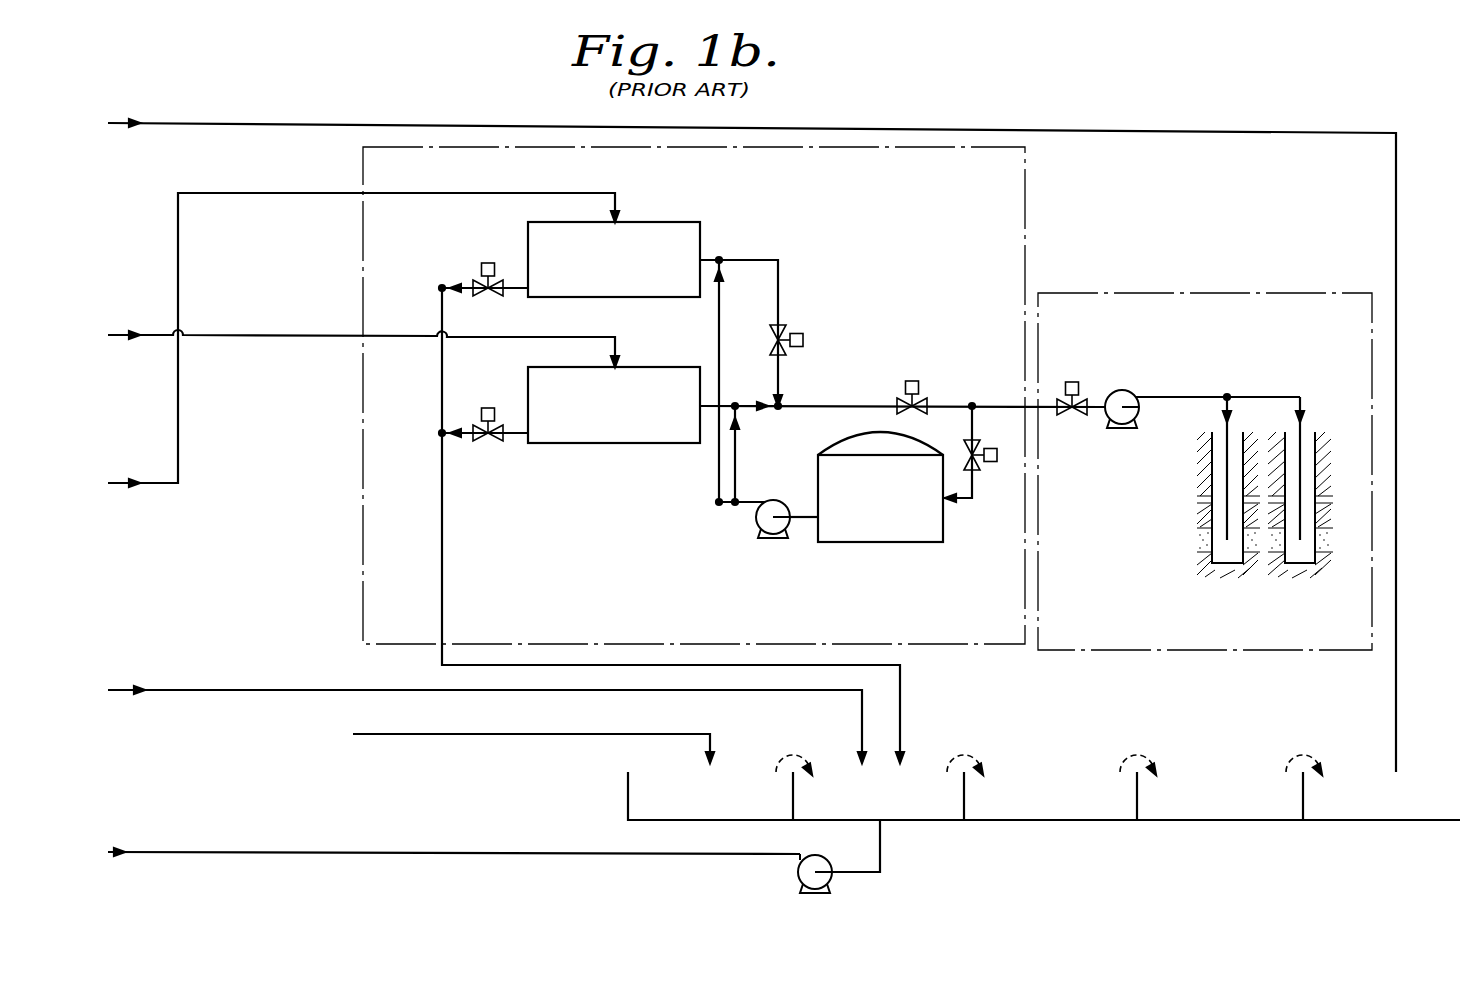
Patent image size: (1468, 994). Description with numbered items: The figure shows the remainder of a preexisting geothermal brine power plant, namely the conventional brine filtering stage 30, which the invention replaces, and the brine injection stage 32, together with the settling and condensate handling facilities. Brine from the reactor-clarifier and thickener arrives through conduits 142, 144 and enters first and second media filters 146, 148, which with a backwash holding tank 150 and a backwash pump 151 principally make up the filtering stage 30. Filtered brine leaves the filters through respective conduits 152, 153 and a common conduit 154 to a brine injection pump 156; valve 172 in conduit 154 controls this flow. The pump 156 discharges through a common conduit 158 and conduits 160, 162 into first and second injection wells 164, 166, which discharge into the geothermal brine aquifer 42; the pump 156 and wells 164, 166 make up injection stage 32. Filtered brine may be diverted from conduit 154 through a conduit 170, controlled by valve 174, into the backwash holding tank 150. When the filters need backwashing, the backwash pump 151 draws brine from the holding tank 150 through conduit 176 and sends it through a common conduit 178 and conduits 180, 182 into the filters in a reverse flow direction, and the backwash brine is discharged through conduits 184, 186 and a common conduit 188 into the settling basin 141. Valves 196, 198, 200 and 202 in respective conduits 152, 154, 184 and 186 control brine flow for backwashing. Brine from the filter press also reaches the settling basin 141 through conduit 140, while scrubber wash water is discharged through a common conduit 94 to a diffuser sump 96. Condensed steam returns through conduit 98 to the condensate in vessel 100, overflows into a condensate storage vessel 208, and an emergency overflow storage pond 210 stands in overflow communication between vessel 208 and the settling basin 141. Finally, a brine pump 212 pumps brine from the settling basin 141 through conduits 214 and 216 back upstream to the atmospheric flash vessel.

The conduit 98 is at (205, 122).
The brine filtering stage 30 is at (1026, 207).
The brine injection stage 32 is at (1182, 293).
The conduit 142 is at (160, 333).
The conduit 144 is at (157, 482).
The conduit 140 is at (176, 688).
The first media filter 146 is at (664, 222).
The second media filter 148 is at (648, 367).
The valve 200 is at (492, 263).
The valve 202 is at (492, 408).
The conduit 184 is at (442, 312).
The conduit 186 is at (466, 438).
The common conduit 188 is at (442, 585).
The conduit 152 is at (780, 296).
The valve 196 is at (804, 340).
The conduit 180 is at (719, 320).
The conduit 182 is at (737, 464).
The common conduit 178 is at (746, 506).
The conduit 153 is at (758, 408).
The common conduit 154 is at (862, 405).
The valve 198 is at (912, 380).
The conduit 170 is at (972, 425).
The valve 174 is at (993, 468).
The backwash holding tank 150 is at (908, 543).
The conduit 176 is at (808, 503).
The backwash pump 151 is at (757, 528).
The valve 172 is at (1076, 381).
The brine injection pump 156 is at (1124, 390).
The common conduit 158 is at (1180, 397).
The conduit 160 is at (1231, 410).
The conduit 162 is at (1304, 406).
The first injection well 164 is at (1214, 430).
The second injection well 166 is at (1314, 432).
The geothermal brine aquifer 42 is at (1190, 539).
The common conduit 94 is at (600, 733).
The diffuser sump 96 is at (628, 793).
The settling basin 141 is at (845, 820).
The emergency overflow storage pond 210 is at (1030, 822).
The condensate storage vessel 208 is at (1240, 822).
The condensate in vessel 100 is at (1418, 822).
The conduit 216 is at (184, 852).
The brine pump 212 is at (798, 878).
The conduit 214 is at (882, 852).